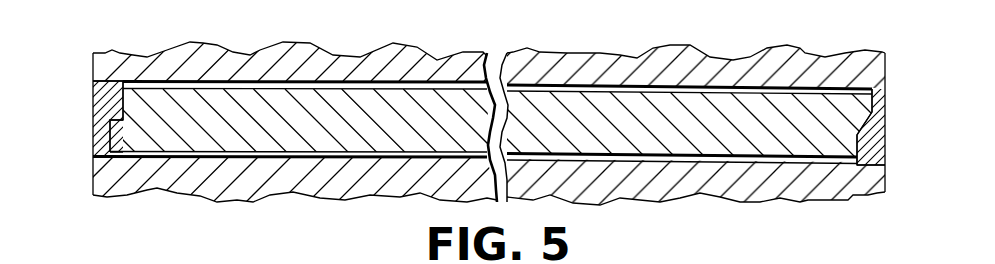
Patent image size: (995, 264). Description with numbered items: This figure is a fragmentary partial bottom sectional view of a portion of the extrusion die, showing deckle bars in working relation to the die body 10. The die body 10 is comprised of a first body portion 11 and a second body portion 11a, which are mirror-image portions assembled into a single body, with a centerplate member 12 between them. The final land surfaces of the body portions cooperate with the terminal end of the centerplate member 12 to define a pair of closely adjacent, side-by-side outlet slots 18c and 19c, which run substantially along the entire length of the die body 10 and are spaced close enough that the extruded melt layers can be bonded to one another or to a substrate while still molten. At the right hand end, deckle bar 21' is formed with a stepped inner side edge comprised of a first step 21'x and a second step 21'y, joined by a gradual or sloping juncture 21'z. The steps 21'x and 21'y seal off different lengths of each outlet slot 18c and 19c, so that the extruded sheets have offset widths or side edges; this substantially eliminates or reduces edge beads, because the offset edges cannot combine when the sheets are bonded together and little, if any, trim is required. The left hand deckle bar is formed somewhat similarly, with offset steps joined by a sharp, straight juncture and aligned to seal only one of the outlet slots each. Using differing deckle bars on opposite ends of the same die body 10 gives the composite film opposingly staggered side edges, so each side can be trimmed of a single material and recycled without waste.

The die body 10 is at (533, 44).
The first body portion 11 is at (798, 188).
The second body portion 11a is at (733, 63).
The centerplate member 12 is at (677, 143).
The outlet slot 18c is at (700, 153).
The outlet slot 19c is at (603, 90).
The deckle bar 21' is at (901, 122).
The first step 21'x is at (872, 203).
The second step 21'y is at (843, 61).
The sloping juncture 21'z is at (905, 138).